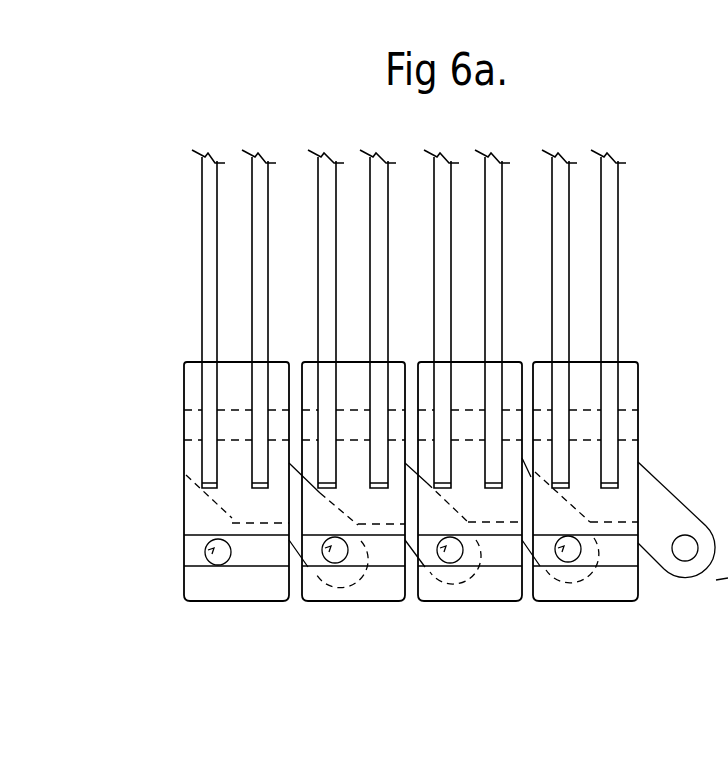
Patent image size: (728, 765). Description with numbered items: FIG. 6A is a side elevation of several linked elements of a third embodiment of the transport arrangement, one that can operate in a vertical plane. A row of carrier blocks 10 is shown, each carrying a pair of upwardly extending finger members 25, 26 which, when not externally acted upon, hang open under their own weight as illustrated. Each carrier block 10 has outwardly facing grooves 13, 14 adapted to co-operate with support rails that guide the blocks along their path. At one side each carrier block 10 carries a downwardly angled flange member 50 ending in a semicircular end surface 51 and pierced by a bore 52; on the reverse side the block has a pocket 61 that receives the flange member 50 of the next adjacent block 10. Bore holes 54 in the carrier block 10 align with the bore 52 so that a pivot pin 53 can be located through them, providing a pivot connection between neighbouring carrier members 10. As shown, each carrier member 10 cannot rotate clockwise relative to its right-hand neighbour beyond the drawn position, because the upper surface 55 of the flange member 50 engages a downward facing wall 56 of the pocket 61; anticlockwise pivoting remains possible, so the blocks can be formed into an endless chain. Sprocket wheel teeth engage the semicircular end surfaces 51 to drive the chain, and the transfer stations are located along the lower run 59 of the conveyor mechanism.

The carrier block 10 is at (185, 593).
The outwardly facing groove 13 is at (193, 547).
The outwardly facing groove 14 is at (718, 594).
The finger member 25 is at (207, 257).
The finger member 26 is at (383, 262).
The downwardly angled flange member 50 is at (660, 527).
The semicircular end surface 51 is at (683, 578).
The bore 52 is at (692, 540).
The pivot pin 53 is at (332, 552).
The bore hole 54 is at (213, 550).
The upper surface of the flange member 55 is at (650, 495).
The downward facing wall of the pocket 56 is at (232, 521).
The lower run 59 is at (289, 540).
The pocket 61 is at (232, 525).